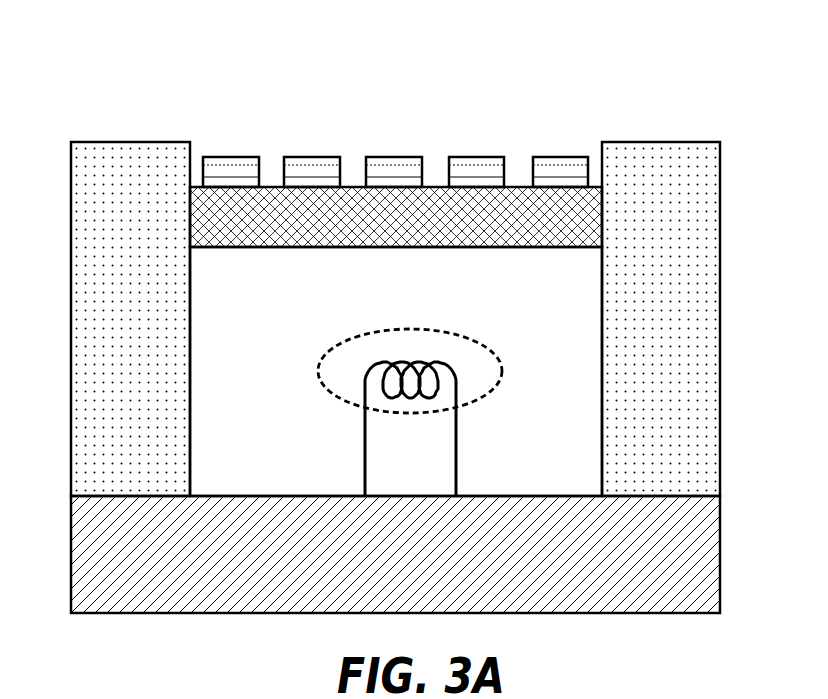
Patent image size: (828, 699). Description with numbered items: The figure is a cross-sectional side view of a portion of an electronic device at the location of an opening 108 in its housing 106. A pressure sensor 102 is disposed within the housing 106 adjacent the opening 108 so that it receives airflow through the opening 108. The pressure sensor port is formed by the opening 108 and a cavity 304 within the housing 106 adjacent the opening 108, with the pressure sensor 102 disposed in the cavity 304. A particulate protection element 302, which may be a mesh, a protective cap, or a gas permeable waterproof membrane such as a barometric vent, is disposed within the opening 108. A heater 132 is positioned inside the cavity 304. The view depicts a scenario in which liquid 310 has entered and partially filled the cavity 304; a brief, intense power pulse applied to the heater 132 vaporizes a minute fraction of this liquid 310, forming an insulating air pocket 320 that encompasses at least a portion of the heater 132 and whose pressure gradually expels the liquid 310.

The opening 108 is at (358, 72).
The pressure sensor 102 is at (396, 558).
The housing 106 is at (121, 142).
The cavity 304 is at (243, 306).
The liquid 310 is at (427, 229).
The particulate protection element 302 is at (468, 157).
The heater 132 is at (458, 470).
The air pocket 320 is at (455, 330).